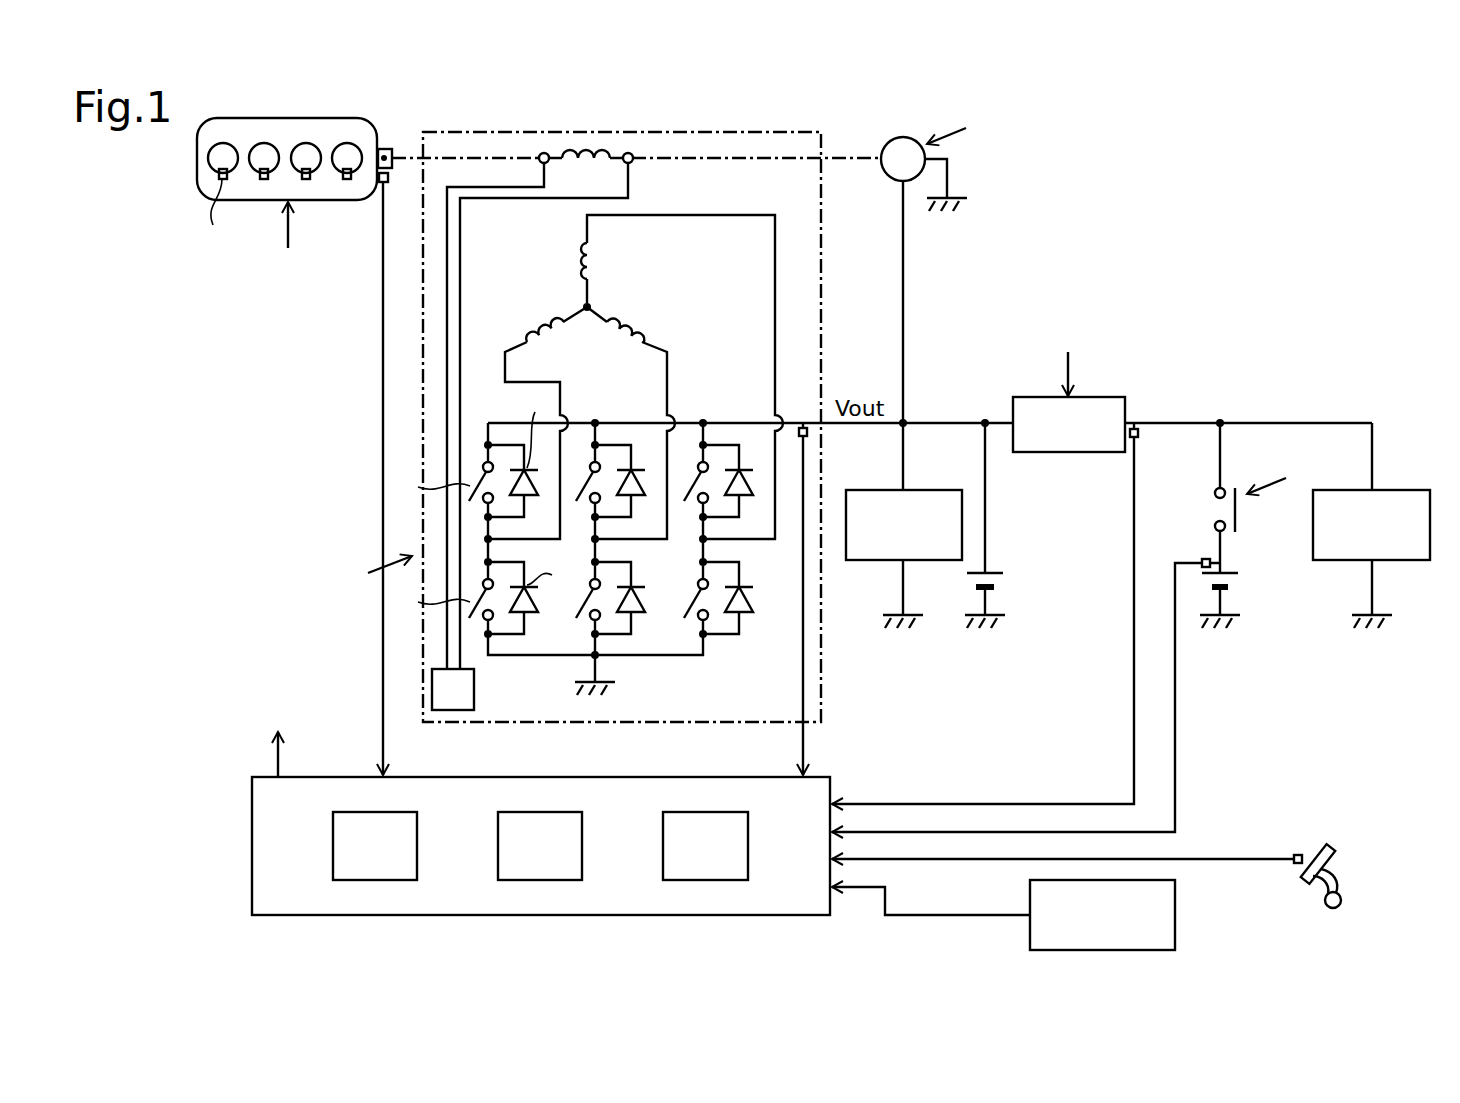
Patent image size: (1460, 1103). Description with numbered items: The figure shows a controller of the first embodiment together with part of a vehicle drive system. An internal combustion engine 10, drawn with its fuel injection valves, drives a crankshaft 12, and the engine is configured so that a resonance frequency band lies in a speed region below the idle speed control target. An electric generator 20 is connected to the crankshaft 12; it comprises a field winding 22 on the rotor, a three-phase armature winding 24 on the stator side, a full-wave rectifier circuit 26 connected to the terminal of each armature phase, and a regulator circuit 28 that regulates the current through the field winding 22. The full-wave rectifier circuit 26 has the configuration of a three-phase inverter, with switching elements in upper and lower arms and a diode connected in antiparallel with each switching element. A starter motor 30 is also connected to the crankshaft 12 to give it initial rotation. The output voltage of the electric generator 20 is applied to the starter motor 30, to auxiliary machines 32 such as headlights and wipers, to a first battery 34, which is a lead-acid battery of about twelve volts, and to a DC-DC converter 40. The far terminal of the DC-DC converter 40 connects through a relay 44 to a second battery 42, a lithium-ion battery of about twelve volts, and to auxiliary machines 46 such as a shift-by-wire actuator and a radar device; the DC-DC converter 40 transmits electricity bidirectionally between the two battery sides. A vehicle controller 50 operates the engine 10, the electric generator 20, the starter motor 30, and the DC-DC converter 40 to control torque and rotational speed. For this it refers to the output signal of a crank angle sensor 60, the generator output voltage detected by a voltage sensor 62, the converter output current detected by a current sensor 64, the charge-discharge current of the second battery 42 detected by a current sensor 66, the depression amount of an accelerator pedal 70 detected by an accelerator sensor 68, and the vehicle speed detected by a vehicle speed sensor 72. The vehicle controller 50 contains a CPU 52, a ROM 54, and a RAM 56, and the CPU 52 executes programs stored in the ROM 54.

The internal combustion engine 10 is at (326, 118).
The crankshaft 12 is at (391, 148).
The electric generator 20 is at (748, 132).
The field winding 22 is at (597, 143).
The three-phase armature winding 24 is at (633, 296).
The full-wave rectifier circuit 26 is at (700, 387).
The regulator circuit 28 is at (474, 688).
The starter motor 30 is at (897, 137).
The auxiliary machines 32 is at (945, 490).
The first battery 34 is at (1003, 572).
The DC-DC converter 40 is at (1105, 397).
The second battery 42 is at (1237, 566).
The relay 44 is at (1238, 516).
The auxiliary machines 46 is at (1410, 490).
The vehicle controller 50 is at (526, 810).
The CPU 52 is at (400, 812).
The ROM 54 is at (565, 812).
The RAM 56 is at (730, 812).
The crank angle sensor 60 is at (388, 176).
The voltage sensor 62 is at (808, 433).
The current sensor 64 is at (1139, 432).
The current sensor 66 is at (1204, 558).
The accelerator sensor 68 is at (1298, 854).
The accelerator pedal 70 is at (1345, 878).
The vehicle speed sensor 72 is at (1175, 915).